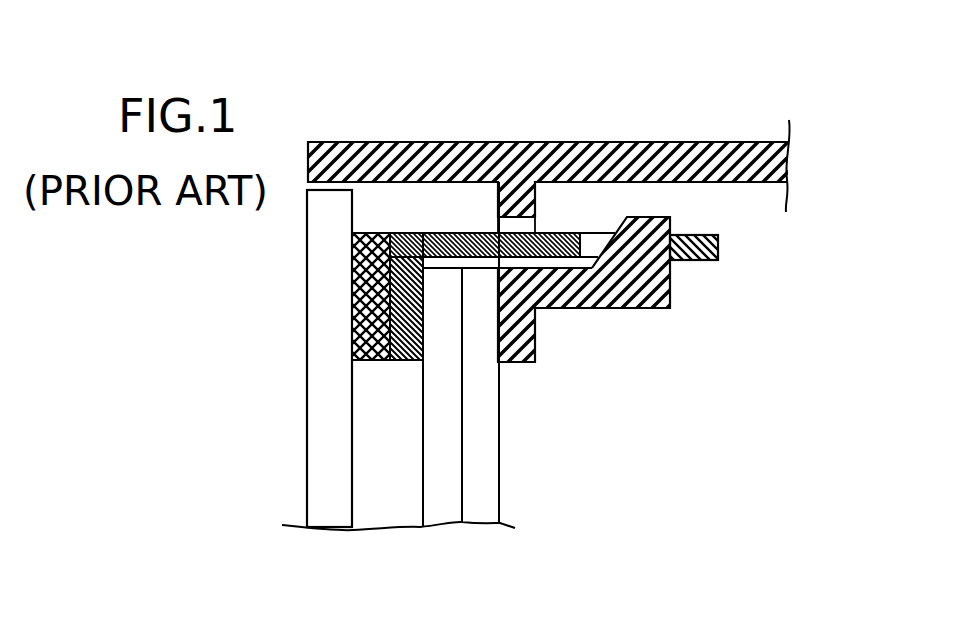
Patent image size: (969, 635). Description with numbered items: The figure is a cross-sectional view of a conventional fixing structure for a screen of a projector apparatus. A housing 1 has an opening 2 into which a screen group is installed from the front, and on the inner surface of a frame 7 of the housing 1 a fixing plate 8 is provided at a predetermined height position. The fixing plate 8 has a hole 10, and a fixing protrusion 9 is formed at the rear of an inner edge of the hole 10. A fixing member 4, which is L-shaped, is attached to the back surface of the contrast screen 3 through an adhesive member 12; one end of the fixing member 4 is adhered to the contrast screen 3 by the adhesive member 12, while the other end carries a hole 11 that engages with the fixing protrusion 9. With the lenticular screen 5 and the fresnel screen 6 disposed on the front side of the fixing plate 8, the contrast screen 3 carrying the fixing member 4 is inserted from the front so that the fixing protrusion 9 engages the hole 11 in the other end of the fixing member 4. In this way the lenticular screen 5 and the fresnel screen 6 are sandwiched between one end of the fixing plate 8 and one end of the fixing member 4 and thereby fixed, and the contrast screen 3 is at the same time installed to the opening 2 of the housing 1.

The housing 1 is at (727, 88).
The opening 2 is at (286, 542).
The contrast screen 3 is at (315, 425).
The fixing member 4 is at (722, 248).
The lenticular screen 5 is at (443, 517).
The fresnel screen 6 is at (495, 492).
The frame 7 is at (505, 140).
The fixing plate 8 is at (537, 343).
The fixing protrusion 9 is at (647, 222).
The hole 10 is at (515, 225).
The hole 11 is at (597, 245).
The adhesive member 12 is at (367, 323).